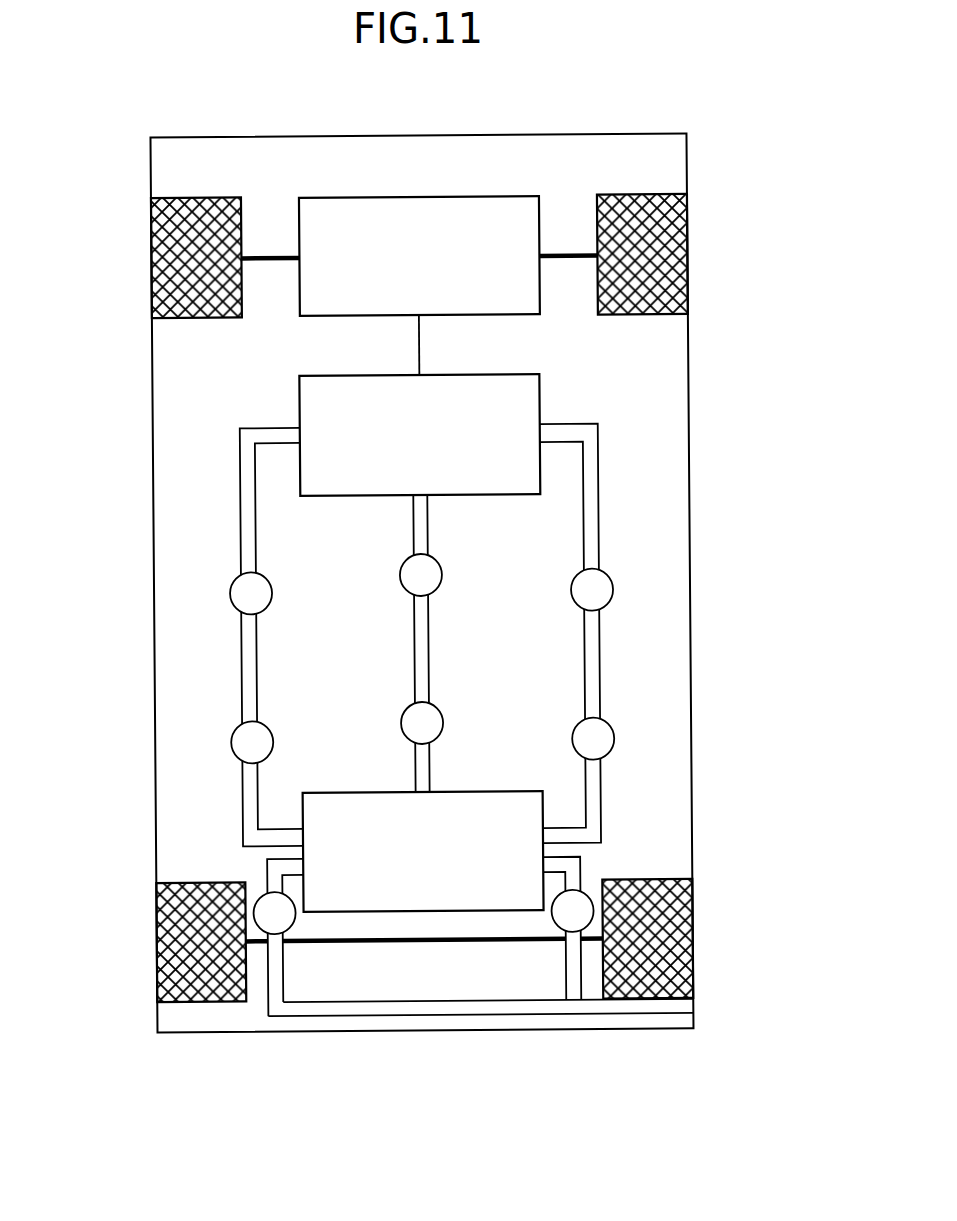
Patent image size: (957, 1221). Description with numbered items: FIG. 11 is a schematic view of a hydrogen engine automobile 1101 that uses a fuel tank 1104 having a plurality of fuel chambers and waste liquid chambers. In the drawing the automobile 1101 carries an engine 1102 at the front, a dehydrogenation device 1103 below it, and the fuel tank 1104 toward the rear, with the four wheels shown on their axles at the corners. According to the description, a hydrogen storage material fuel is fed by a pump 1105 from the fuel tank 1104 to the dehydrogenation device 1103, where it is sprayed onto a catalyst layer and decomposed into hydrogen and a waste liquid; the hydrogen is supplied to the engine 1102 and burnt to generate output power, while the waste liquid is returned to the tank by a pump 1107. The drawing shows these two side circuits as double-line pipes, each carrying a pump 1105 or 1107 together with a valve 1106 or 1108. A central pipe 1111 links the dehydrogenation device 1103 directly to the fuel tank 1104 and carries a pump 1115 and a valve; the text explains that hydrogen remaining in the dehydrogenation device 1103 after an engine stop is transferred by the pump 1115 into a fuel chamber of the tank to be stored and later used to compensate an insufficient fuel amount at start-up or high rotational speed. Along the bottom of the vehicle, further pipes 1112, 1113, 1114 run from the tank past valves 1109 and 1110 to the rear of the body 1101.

The vehicle 1101 is at (154, 455).
The engine 1102 is at (420, 197).
The dehydrogenation device 1103 is at (301, 392).
The fuel tank 1104 is at (481, 791).
The pump 1105 is at (230, 592).
The valve 1106 is at (229, 745).
The pump 1107 is at (613, 588).
The valve 1108 is at (613, 739).
The valve 1109 is at (289, 927).
The valve 1110 is at (552, 929).
The pipe 1111 is at (414, 667).
The pipe 1112 is at (689, 1004).
The pipe 1113 is at (541, 1026).
The pipe 1114 is at (674, 970).
The pump 1115 is at (442, 575).